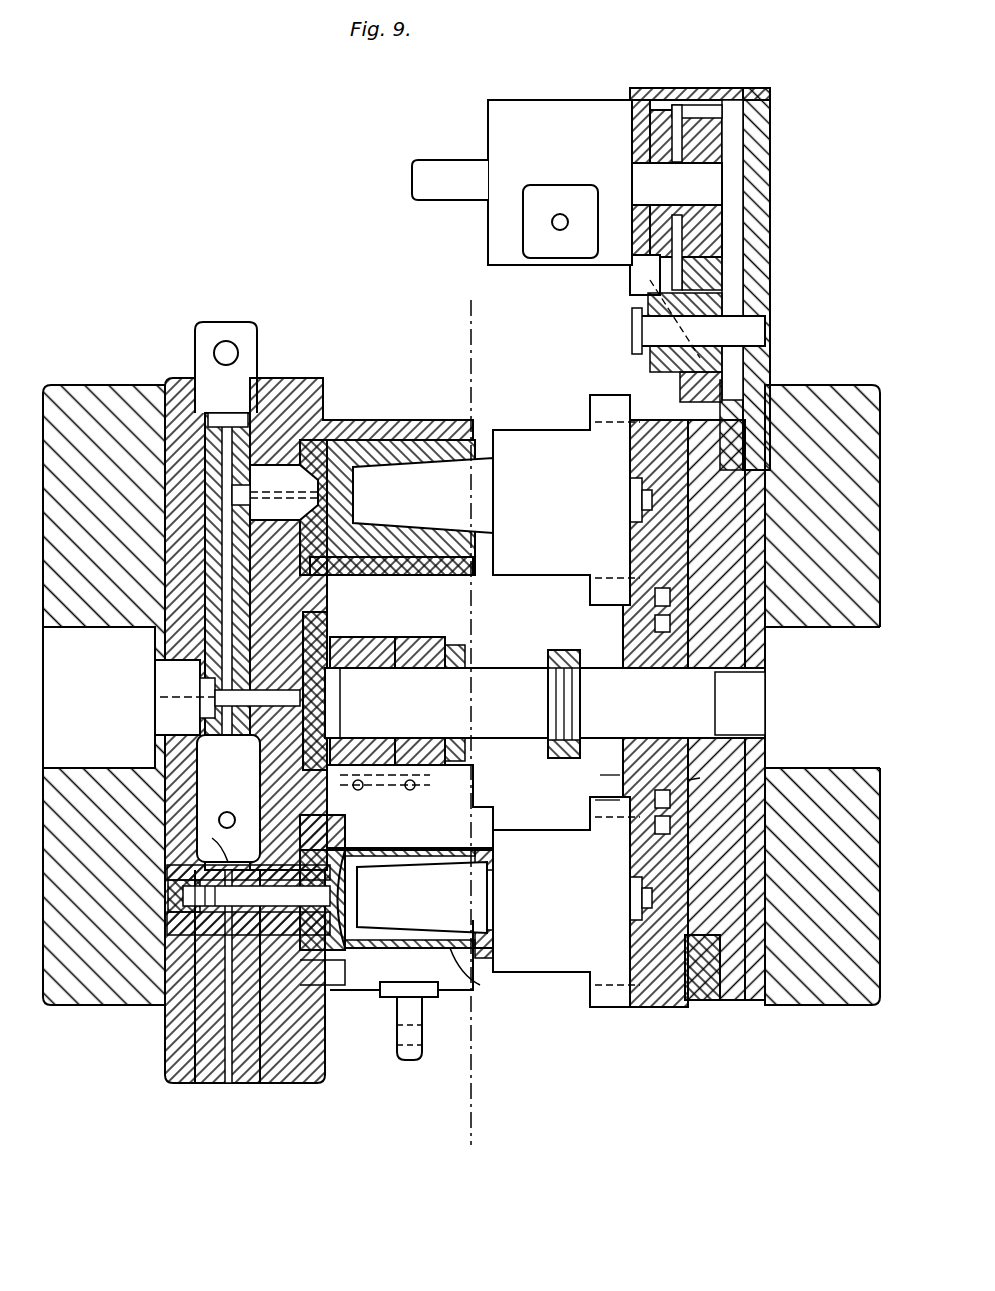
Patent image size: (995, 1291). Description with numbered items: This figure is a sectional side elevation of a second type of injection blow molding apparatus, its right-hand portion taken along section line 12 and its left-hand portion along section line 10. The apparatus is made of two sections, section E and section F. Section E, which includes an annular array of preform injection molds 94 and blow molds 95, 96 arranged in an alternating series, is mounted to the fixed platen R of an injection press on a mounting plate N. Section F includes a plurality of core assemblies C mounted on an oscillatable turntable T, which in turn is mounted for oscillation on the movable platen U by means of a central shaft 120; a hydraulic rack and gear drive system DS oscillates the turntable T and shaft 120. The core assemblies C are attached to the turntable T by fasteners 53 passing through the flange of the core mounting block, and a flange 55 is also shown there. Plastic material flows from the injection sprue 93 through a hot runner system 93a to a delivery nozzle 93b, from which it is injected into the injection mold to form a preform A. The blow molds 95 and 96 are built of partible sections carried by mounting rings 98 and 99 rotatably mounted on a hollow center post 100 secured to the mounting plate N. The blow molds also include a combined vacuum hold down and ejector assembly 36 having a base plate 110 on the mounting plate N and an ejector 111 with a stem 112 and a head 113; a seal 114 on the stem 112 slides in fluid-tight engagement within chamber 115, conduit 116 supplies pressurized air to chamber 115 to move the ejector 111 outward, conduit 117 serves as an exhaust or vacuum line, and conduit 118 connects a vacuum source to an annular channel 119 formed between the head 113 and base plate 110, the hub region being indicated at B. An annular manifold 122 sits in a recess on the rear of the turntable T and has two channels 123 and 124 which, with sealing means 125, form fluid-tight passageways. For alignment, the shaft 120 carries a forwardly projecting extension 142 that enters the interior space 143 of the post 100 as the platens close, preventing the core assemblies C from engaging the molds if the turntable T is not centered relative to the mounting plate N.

The section line 10 is at (450, 347).
The section line 12 is at (455, 323).
The combined vacuum hold down and ejector assembly 36 is at (416, 903).
The fasteners 53 is at (612, 425).
The flange 55 is at (592, 400).
The injection sprue 93 is at (165, 694).
The hot runner system 93a is at (235, 500).
The delivery nozzle 93b is at (305, 482).
The injection molds 94 is at (432, 440).
The blow mold 95 is at (452, 797).
The blow mold 96 is at (345, 422).
The mounting ring 98 is at (412, 643).
The mounting ring 99 is at (362, 643).
The hollow center post 100 is at (445, 660).
The base plate 110 is at (310, 938).
The ejector 111 is at (302, 945).
The stem 112 is at (235, 898).
The head 113 is at (352, 881).
The seal 114 is at (167, 922).
The chamber 115 is at (170, 932).
The conduit 116 is at (210, 842).
The conduit 117 is at (226, 1085).
The conduit 118 is at (245, 850).
The annular channel 119 is at (343, 831).
The central shaft 120 is at (700, 718).
The manifold 122 is at (692, 790).
The channel 123 is at (605, 778).
The channel 124 is at (600, 800).
The sealing means 125 is at (575, 765).
The forwardly projecting extension 142 is at (492, 688).
The interior space 143 is at (318, 655).
The preform A is at (396, 468).
The hub assembly B is at (455, 945).
The core assembly C is at (545, 428).
The hydraulic rack and gear drive system DS is at (710, 192).
The section E is at (458, 1128).
The section F is at (493, 1045).
The mounting plate N is at (300, 1083).
The fixed platen R is at (82, 1003).
The turntable T is at (668, 1007).
The movable platen U is at (825, 1005).